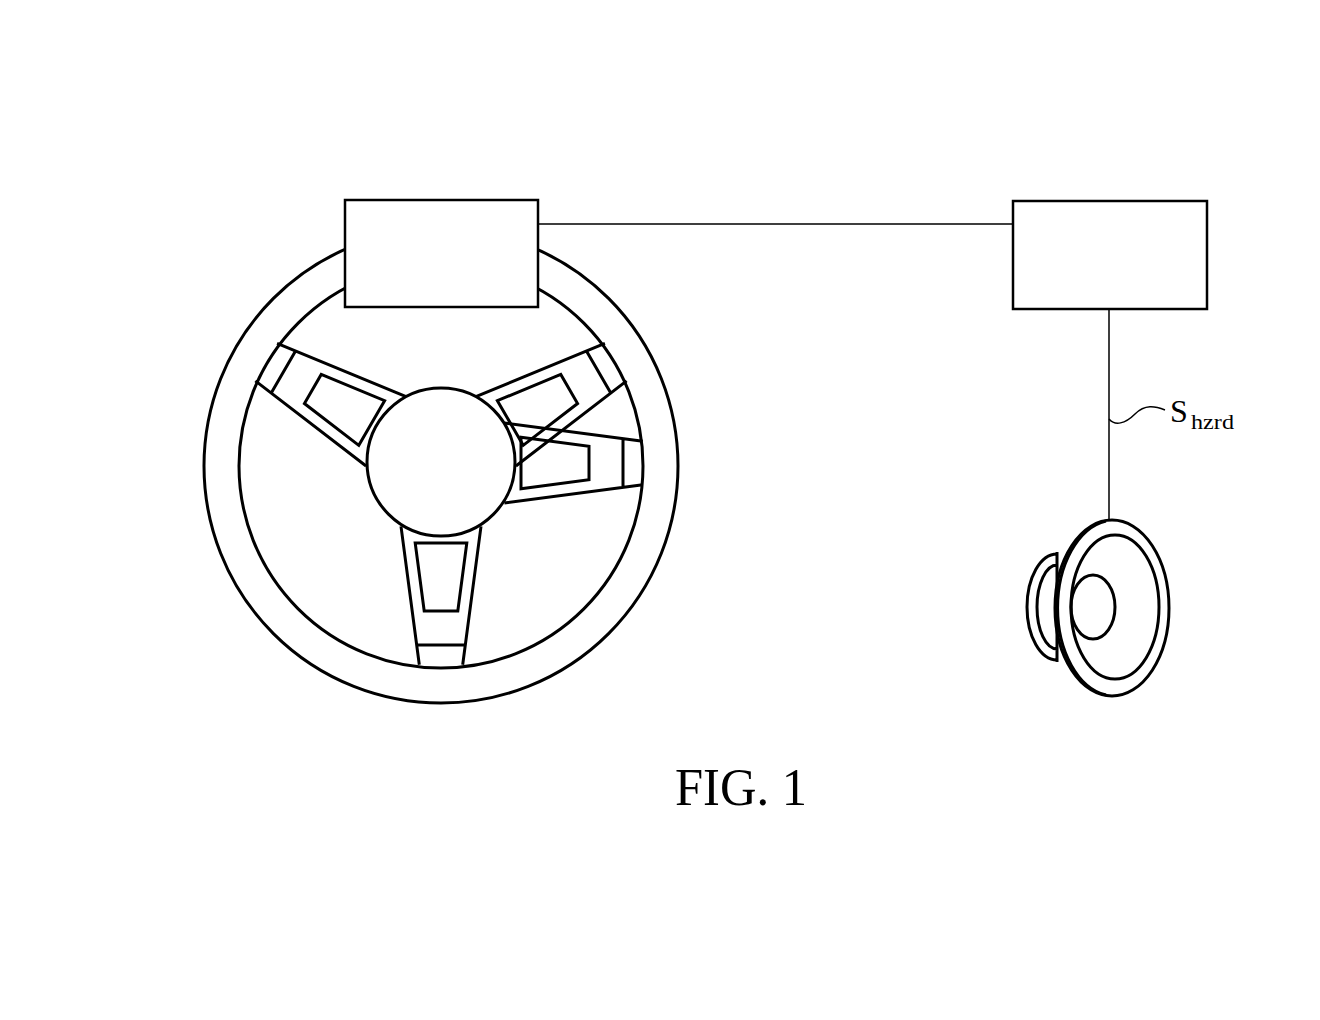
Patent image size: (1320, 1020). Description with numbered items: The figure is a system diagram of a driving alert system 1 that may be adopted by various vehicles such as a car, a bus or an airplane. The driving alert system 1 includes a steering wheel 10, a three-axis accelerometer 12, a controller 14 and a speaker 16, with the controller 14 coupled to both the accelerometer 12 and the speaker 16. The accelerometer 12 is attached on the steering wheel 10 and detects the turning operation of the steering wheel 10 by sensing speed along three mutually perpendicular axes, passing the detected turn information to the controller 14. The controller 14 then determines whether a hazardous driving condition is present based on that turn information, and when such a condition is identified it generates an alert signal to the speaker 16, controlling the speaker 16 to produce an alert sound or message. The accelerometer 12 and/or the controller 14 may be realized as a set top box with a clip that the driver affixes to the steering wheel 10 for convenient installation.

The driving alert system 1 is at (814, 98).
The steering wheel 10 is at (203, 466).
The 3-axis accelerometer 12 is at (343, 214).
The controller 14 is at (1207, 258).
The speaker 16 is at (1170, 611).